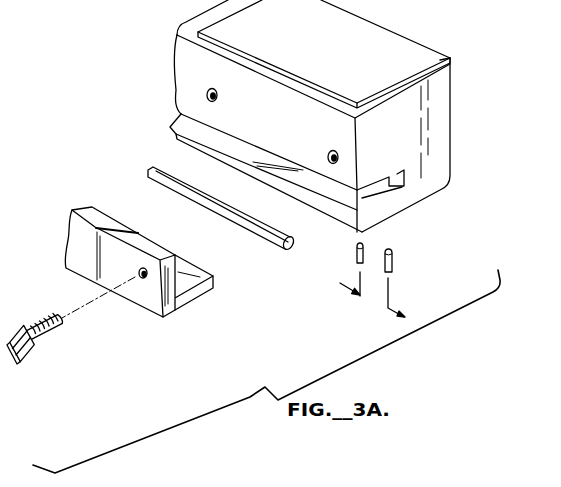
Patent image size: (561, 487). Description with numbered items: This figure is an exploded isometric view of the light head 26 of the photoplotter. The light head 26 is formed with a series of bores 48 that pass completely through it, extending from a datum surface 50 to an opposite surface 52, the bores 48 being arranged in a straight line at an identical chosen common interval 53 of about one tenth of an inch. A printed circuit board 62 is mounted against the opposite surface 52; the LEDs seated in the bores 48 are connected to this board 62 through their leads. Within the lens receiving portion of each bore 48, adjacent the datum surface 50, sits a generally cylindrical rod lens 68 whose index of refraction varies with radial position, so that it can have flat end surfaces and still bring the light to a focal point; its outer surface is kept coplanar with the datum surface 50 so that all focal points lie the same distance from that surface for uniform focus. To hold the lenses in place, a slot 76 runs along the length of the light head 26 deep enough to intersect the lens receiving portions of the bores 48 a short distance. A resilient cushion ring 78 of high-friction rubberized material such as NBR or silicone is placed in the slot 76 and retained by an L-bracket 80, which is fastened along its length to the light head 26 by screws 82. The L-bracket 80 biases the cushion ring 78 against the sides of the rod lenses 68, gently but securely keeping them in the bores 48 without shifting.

The light head 26 is at (453, 115).
The bores 48 is at (410, 188).
The datum surface 50 is at (403, 212).
The opposite surface 52 is at (439, 61).
The common interval 53 is at (376, 298).
The printed circuit board 62 is at (398, 50).
The rod lens 68 is at (393, 257).
The slot 76 is at (362, 194).
The resilient cushion ring 78 is at (275, 247).
The L-bracket 80 is at (138, 304).
The screws 82 is at (24, 350).